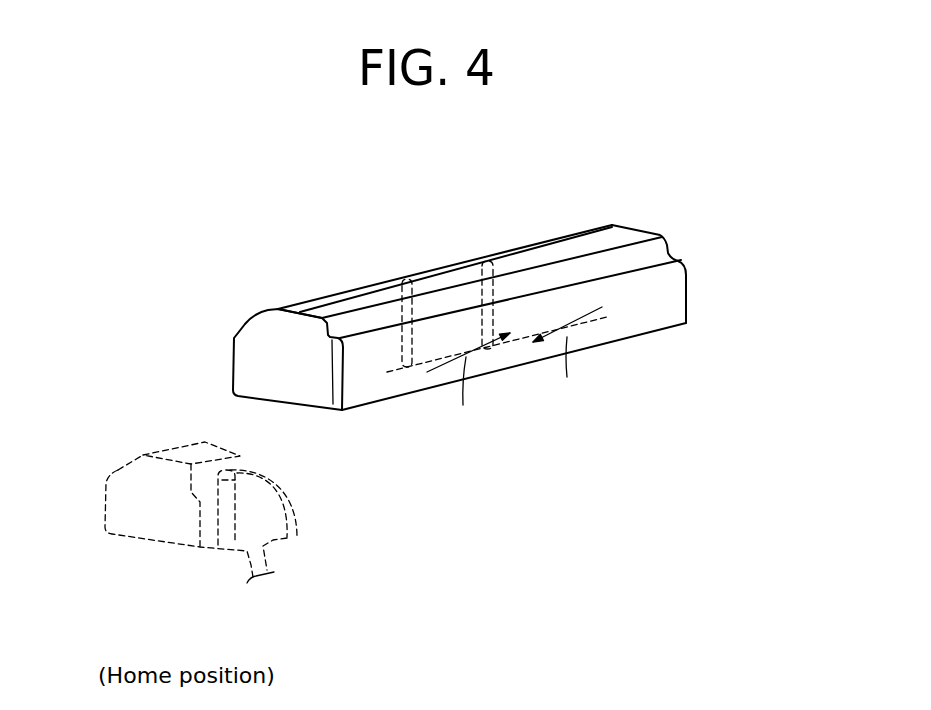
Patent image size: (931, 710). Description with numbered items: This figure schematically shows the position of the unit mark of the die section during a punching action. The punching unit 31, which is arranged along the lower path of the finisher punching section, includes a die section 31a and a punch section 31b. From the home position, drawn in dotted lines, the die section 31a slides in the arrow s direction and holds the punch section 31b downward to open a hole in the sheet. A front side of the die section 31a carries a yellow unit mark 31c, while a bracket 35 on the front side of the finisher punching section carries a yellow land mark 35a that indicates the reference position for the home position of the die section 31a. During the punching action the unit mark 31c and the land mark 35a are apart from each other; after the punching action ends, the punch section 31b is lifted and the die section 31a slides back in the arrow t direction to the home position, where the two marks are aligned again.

The punching unit 31 is at (718, 276).
The die section 31a is at (432, 275).
The punch section 31b is at (405, 281).
The unit mark 31c is at (333, 404).
The bracket 35 is at (272, 521).
The land mark 35a is at (223, 527).